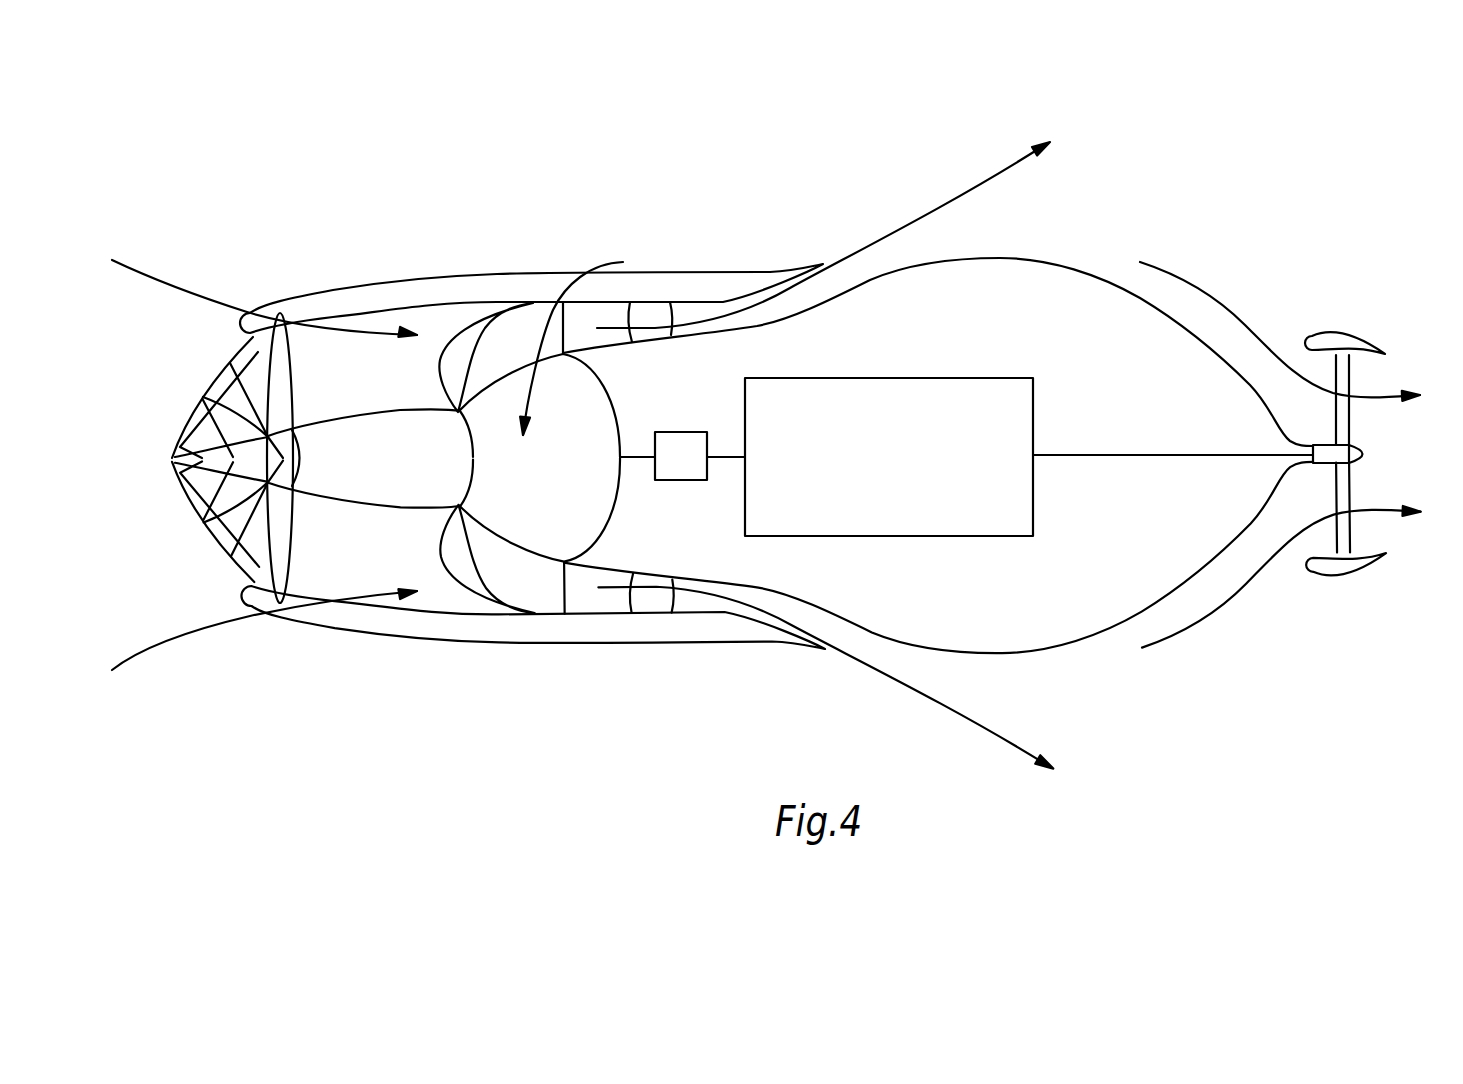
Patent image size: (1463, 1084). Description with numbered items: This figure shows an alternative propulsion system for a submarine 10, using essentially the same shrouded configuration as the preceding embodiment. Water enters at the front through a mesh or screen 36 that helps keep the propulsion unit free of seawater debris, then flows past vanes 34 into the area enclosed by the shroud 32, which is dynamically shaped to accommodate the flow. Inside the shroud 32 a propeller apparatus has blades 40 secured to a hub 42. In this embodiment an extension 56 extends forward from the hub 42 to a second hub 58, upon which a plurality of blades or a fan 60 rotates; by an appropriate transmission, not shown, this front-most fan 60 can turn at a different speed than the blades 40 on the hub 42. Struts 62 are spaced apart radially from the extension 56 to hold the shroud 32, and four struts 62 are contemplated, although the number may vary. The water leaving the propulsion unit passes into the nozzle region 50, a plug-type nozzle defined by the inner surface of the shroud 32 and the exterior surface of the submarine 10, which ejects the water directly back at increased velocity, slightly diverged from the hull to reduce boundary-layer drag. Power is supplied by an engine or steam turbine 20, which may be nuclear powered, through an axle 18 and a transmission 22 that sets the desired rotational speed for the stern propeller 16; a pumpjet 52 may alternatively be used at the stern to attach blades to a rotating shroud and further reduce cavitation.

The submarine 10 is at (1140, 416).
The propeller 16 is at (1357, 383).
The axle 18 is at (636, 460).
The engine or steam turbine 20 is at (873, 469).
The transmission 22 is at (678, 447).
The shroud 32 is at (435, 292).
The vanes 34 is at (648, 310).
The mesh or screen 36 is at (243, 555).
The blades 40 is at (530, 343).
The hub 42 is at (585, 338).
The nozzle region 50 is at (842, 454).
The pumpjet 52 is at (1330, 568).
The extension 56 is at (427, 427).
The hub 58 is at (204, 397).
The blades or fan 60 is at (273, 347).
The struts 62 is at (365, 347).